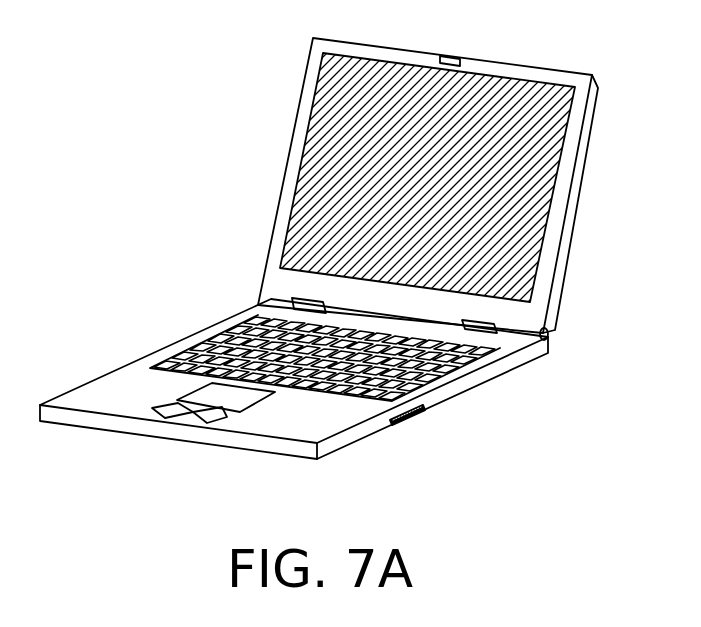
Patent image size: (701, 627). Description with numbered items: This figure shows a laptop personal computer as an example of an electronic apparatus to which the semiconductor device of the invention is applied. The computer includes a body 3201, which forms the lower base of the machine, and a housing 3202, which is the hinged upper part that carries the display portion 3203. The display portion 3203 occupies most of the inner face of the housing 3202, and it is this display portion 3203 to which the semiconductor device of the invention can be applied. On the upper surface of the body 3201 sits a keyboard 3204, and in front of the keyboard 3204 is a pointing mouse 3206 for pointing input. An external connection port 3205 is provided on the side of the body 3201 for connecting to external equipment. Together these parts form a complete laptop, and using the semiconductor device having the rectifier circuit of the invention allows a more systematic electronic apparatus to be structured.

The body 3201 is at (122, 400).
The housing 3202 is at (315, 105).
The display portion 3203 is at (317, 193).
The keyboard 3204 is at (462, 363).
The external connection port 3205 is at (410, 415).
The pointing mouse 3206 is at (212, 405).